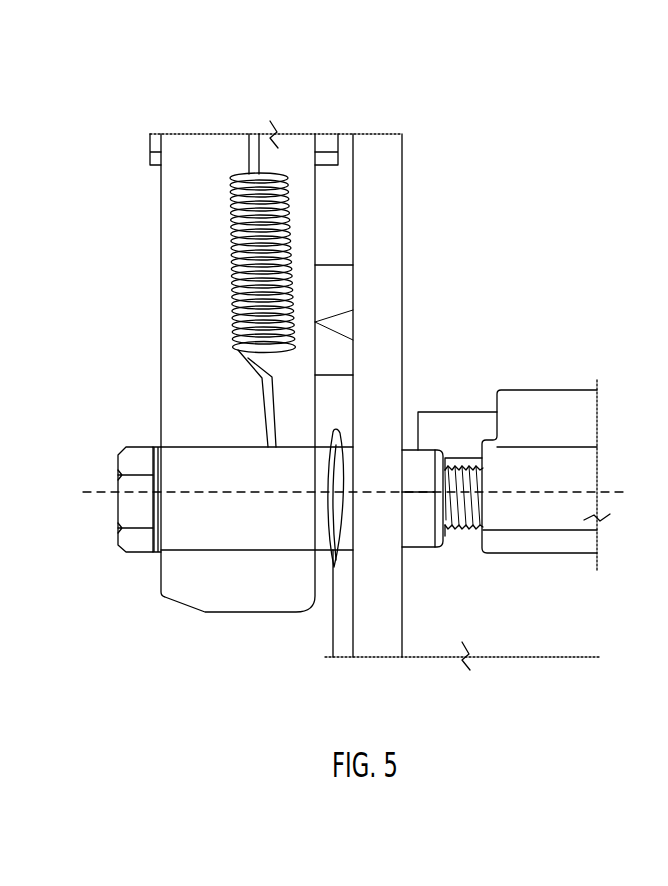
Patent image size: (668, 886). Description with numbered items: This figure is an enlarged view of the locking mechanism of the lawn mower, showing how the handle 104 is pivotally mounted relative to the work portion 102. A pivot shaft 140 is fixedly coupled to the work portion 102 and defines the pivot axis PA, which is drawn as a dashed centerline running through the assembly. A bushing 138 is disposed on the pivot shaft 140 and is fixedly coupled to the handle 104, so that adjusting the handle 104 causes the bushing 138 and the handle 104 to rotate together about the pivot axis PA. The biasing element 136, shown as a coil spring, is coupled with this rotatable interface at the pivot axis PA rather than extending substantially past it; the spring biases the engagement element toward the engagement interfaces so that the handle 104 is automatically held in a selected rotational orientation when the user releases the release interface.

The work portion 102 is at (553, 403).
The handle 104 is at (432, 142).
The biasing element 136 is at (262, 273).
The bushing 138 is at (221, 525).
The pivot shaft 140 is at (347, 442).
The pivot axis PA is at (107, 491).